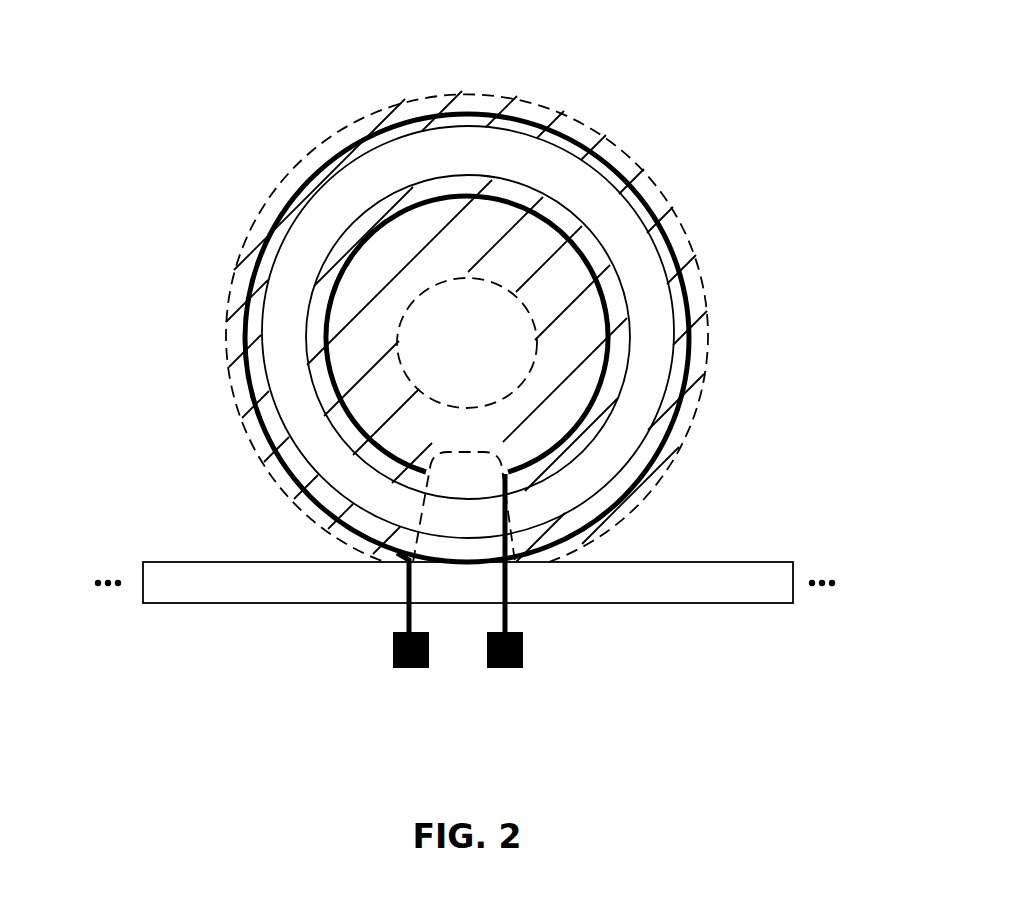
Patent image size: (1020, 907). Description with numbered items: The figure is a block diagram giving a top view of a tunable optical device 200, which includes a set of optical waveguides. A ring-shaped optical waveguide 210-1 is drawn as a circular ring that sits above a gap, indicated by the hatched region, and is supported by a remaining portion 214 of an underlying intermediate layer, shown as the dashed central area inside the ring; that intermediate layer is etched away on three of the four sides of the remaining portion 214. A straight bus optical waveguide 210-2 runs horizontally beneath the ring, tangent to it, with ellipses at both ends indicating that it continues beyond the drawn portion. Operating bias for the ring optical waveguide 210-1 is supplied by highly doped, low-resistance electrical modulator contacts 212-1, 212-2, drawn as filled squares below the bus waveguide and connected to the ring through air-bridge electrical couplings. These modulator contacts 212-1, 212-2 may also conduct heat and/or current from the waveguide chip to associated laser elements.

The tunable optical device 200 is at (690, 80).
The optical waveguide 210-1 is at (345, 197).
The optical waveguide 210-2 is at (183, 583).
The remaining portion 214 is at (443, 338).
The modulator contact 212-1 is at (392, 655).
The modulator contact 212-2 is at (524, 653).